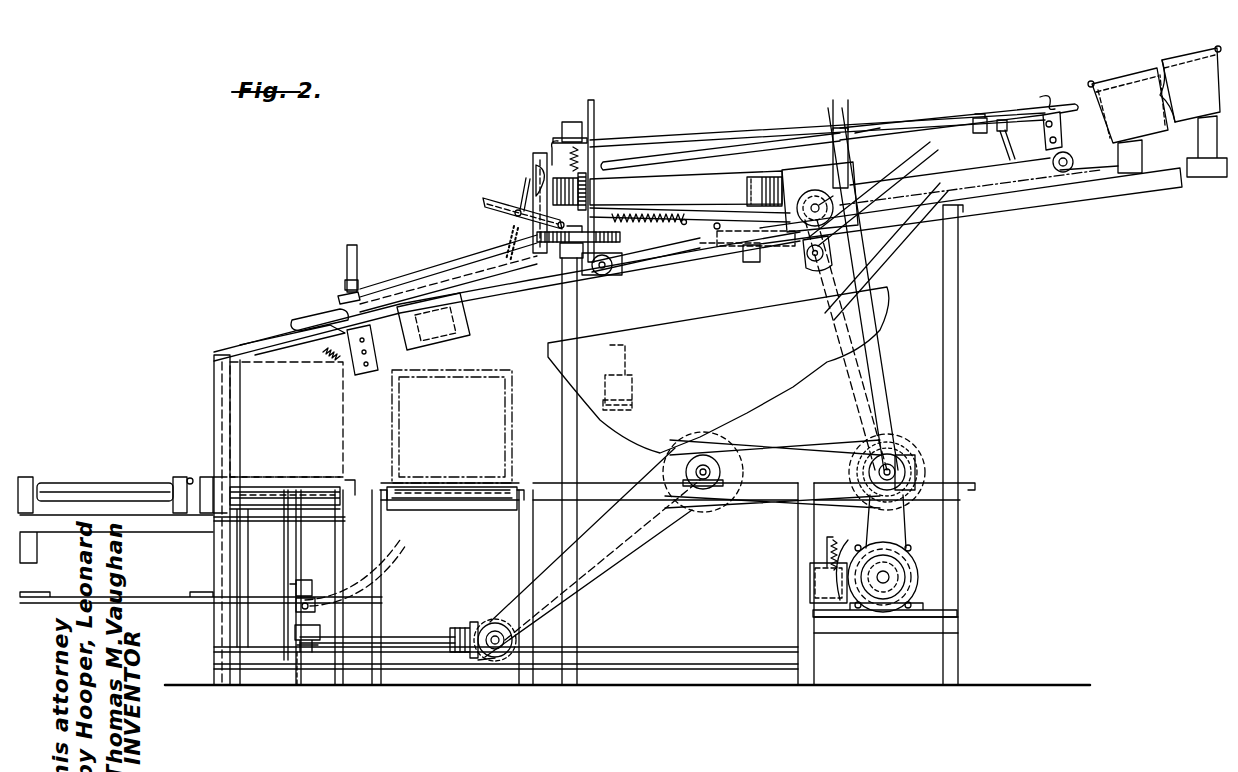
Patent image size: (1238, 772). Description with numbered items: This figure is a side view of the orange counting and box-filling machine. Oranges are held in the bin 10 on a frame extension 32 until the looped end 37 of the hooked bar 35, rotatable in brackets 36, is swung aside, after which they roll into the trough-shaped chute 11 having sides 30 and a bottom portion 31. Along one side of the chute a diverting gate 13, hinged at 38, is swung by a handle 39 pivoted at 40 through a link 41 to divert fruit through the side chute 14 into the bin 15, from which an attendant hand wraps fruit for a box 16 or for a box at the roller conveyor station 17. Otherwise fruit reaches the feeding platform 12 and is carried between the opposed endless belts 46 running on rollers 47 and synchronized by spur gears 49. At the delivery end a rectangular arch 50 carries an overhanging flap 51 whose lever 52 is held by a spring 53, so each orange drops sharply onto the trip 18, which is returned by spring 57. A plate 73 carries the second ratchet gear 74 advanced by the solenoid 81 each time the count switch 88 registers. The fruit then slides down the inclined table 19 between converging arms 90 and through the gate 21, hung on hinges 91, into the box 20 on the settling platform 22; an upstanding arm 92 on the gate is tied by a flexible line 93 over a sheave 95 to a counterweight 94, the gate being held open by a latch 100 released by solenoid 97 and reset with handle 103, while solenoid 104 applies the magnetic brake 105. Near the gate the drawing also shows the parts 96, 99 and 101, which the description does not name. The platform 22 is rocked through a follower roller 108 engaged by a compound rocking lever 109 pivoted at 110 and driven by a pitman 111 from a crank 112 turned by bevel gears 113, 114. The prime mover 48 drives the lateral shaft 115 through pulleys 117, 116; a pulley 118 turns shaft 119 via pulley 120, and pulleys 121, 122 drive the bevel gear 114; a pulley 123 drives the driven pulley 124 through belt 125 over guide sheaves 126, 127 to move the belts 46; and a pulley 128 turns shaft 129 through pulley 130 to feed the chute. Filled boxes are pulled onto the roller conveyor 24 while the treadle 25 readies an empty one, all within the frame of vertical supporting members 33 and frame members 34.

The bin 10 is at (1180, 64).
The chute 11 is at (836, 125).
The feeding platform 12 is at (725, 248).
The diverting gate 13 is at (924, 138).
The chute 14 is at (893, 257).
The bin 15 is at (703, 330).
The box 16 is at (512, 435).
The roller conveyor station 17 is at (498, 511).
The trip 18 is at (488, 203).
The inclined table 19 is at (452, 278).
The box 20 is at (330, 420).
The gate 21 is at (290, 333).
The settling platform 22 is at (265, 508).
The roller conveyor 24 is at (107, 486).
The treadle 25 is at (40, 595).
The sides 30 is at (1057, 109).
The bottom portion 31 is at (1097, 148).
The frame extension 32 is at (1142, 190).
The vertical supporting members 33 is at (962, 375).
The frame members 34 is at (306, 590).
The hooked bar 35 is at (801, 127).
The brackets 36 is at (1045, 95).
The looped end 37 is at (1062, 135).
The hinge 38 is at (1000, 118).
The handle 39 is at (641, 160).
The pivot 40 is at (845, 130).
The link 41 is at (975, 114).
The endless belts 46 is at (674, 180).
The rollers 47 is at (552, 150).
The prime mover 48 is at (918, 570).
The spur gears 49 is at (700, 235).
The rectangular arch 50 is at (533, 160).
The overhanging flap 51 is at (528, 195).
The lever 52 is at (535, 180).
The spring 53 is at (508, 244).
The spring 57 is at (672, 224).
The plate 73 is at (596, 113).
The second ratchet gear 74 is at (590, 188).
The solenoid 81 is at (562, 262).
The switch 88 is at (578, 120).
The converging arms 90 is at (400, 262).
The hinges 91 is at (352, 250).
The upstanding arm 92 is at (346, 274).
The flexible line 93 is at (397, 278).
The counterweight 94 is at (632, 383).
The sheave 95 is at (604, 277).
The plate 96 is at (463, 320).
The solenoid 97 is at (463, 340).
The chute 99 is at (400, 352).
The latch 100 is at (340, 292).
The spring 101 is at (323, 348).
The handle 103 is at (312, 318).
The solenoid 104 is at (827, 584).
The magnetic brake 105 is at (913, 552).
The follower roller 108 is at (250, 520).
The compound rocking lever 109 is at (283, 562).
The pivot 110 is at (292, 584).
The pitman 111 is at (297, 688).
The crank 112 is at (295, 630).
The bevel gear 113 is at (470, 626).
The driving bevel gear 114 is at (483, 618).
The shaft 115 is at (900, 447).
The pulley 116 is at (913, 447).
The driving pulley 117 is at (905, 586).
The pulley 118 is at (927, 462).
The shaft 119 is at (698, 492).
The pulley 120 is at (663, 468).
The pulley 121 is at (738, 463).
The pulley 122 is at (493, 662).
The pulley 123 is at (937, 470).
The driven pulley 124 is at (738, 252).
The belt 125 is at (878, 348).
The guide sheave 126 is at (890, 271).
The guide sheave 127 is at (808, 263).
The pulley 128 is at (849, 468).
The shaft 129 is at (814, 205).
The pulley 130 is at (860, 186).